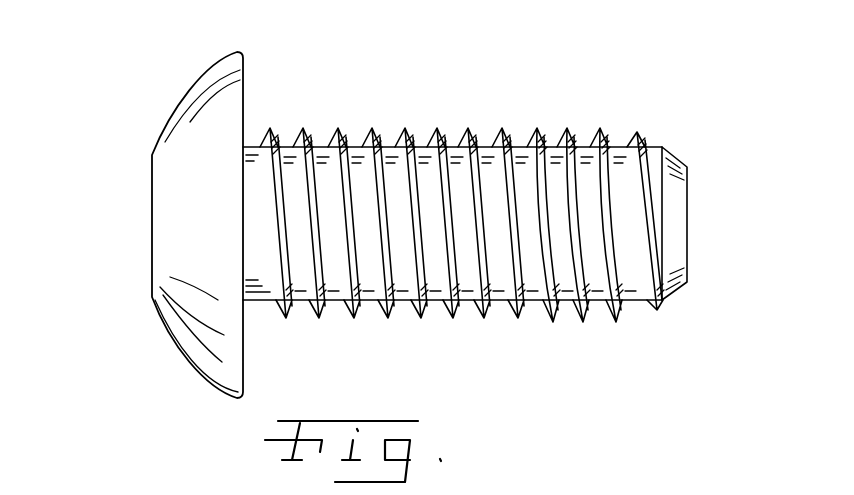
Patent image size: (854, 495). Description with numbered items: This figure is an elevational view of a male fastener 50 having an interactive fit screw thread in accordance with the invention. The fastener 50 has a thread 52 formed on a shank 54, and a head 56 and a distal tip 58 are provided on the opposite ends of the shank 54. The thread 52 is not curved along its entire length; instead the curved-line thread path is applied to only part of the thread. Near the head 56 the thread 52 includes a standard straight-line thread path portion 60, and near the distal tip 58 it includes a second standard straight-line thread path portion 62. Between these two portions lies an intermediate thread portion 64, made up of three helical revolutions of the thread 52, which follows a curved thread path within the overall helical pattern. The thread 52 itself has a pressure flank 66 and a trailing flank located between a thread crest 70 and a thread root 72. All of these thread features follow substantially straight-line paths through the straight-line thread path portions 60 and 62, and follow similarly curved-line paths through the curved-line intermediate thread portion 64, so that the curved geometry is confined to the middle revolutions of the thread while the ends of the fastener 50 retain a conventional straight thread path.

The fastener 50 is at (155, 82).
The thread 52 is at (612, 322).
The shank 54 is at (254, 136).
The head 56 is at (180, 137).
The distal tip 58 is at (687, 205).
The straight-line thread path portion 60 is at (530, 325).
The straight-line thread path portion 62 is at (690, 125).
The intermediate thread portion 64 is at (608, 125).
The pressure flank 66 is at (332, 138).
The thread crest 70 is at (334, 128).
The thread root 72 is at (454, 136).